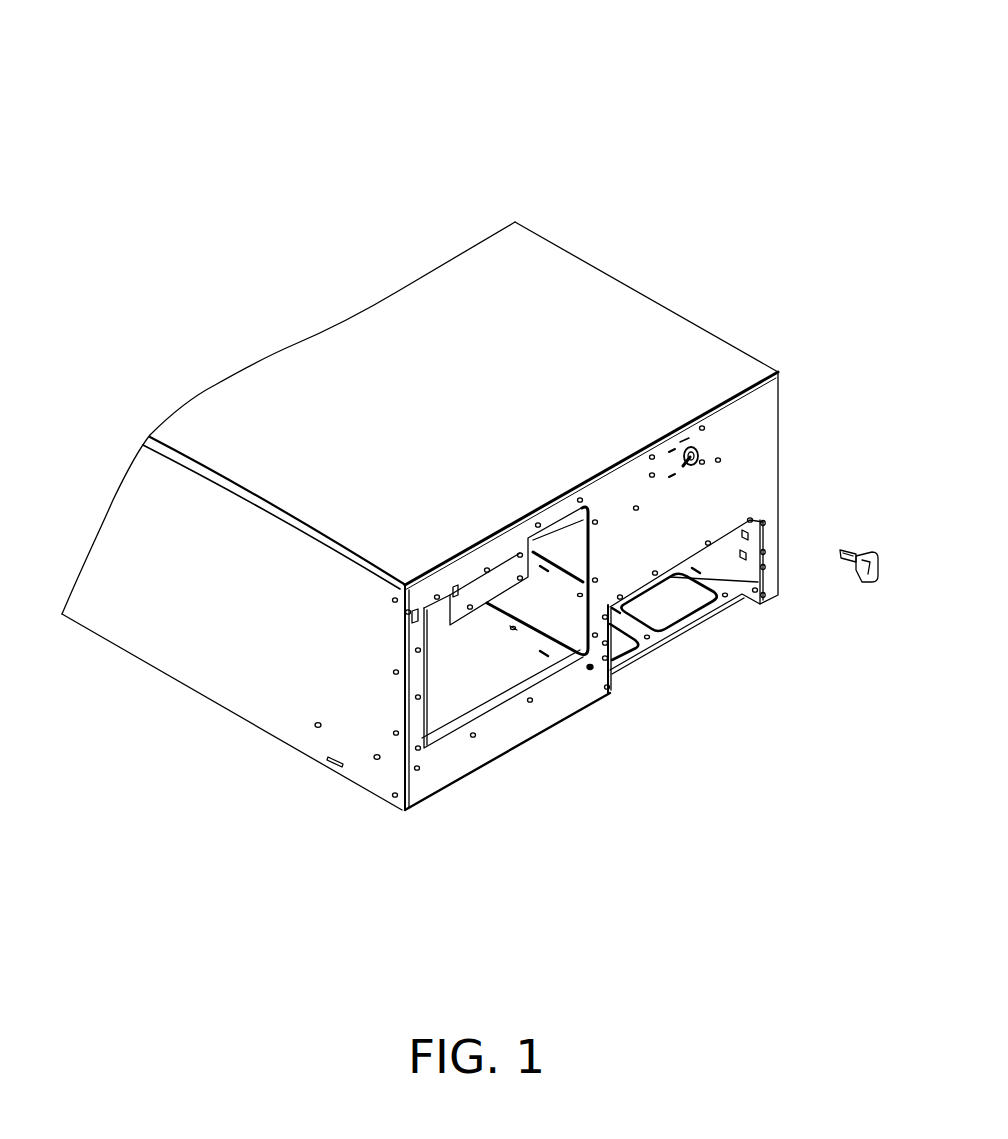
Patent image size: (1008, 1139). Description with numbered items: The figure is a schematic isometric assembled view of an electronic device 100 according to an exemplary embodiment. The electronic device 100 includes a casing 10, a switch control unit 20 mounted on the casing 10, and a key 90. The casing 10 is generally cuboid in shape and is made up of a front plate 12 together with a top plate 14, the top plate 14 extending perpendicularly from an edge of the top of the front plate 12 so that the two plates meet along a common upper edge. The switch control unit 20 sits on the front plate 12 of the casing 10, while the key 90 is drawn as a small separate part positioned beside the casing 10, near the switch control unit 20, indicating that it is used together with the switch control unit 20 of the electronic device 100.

The electronic device 100 is at (375, 93).
The casing 10 is at (222, 655).
The front plate 12 is at (763, 403).
The top plate 14 is at (636, 323).
The switch control unit 20 is at (693, 466).
The key 90 is at (857, 576).